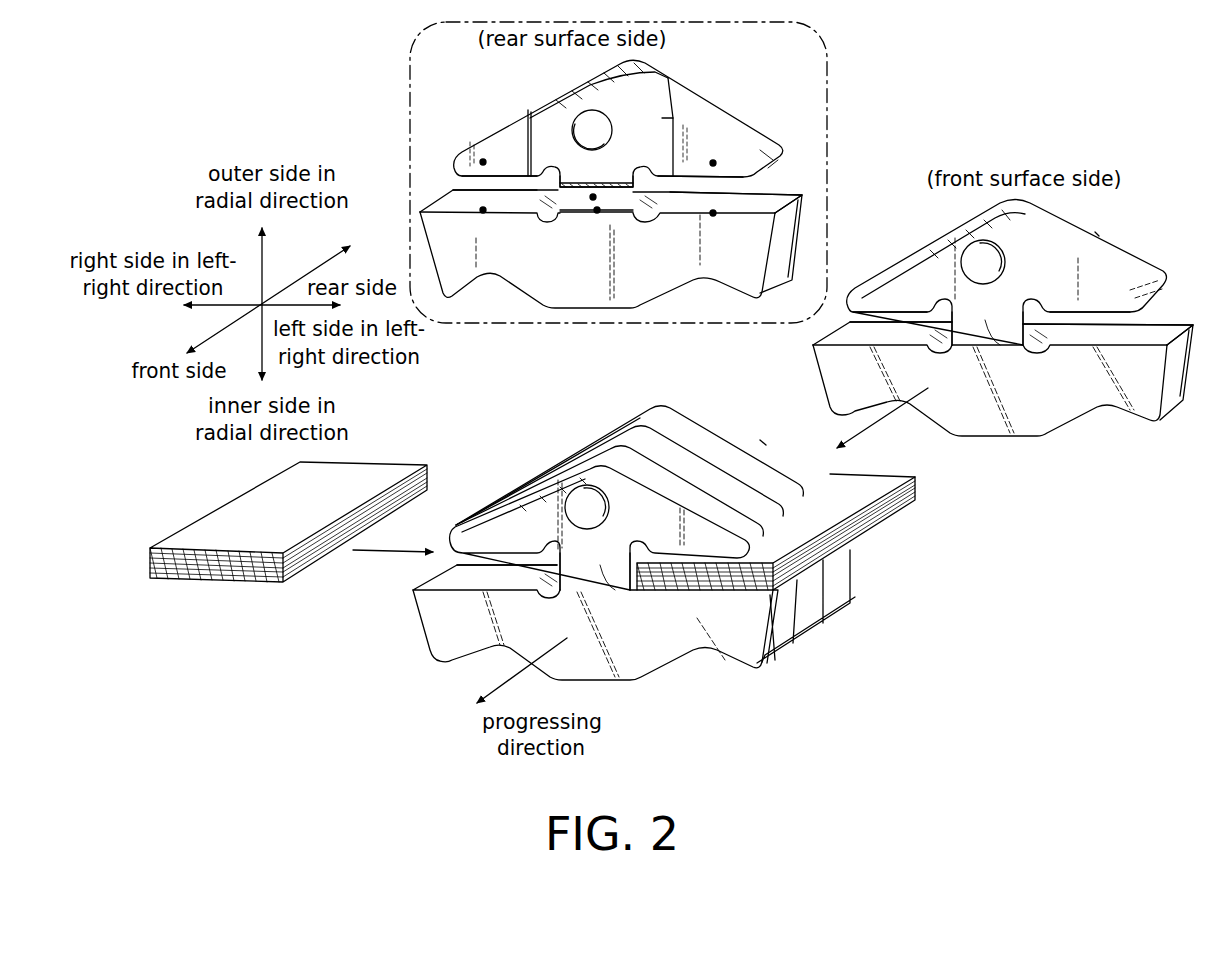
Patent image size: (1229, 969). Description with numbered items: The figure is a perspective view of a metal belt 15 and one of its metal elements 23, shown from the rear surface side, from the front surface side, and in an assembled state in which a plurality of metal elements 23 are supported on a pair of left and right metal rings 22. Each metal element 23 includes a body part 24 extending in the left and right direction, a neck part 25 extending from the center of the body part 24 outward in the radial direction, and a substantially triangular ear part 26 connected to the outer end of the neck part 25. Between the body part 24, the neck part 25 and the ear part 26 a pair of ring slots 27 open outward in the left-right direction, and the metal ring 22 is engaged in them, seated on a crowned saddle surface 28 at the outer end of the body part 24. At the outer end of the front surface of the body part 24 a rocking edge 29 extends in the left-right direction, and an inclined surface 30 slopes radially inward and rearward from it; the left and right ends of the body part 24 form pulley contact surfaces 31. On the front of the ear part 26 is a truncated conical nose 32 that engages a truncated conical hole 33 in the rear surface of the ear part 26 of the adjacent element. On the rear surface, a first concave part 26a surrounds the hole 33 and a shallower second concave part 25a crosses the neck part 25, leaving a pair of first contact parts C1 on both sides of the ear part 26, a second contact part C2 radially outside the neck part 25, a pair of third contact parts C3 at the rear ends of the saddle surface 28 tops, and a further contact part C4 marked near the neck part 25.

The metal belt 15 is at (530, 440).
The metal ring 22 is at (219, 500).
The metal element 23 is at (692, 80).
The body part 24 is at (648, 310).
The neck part 25 is at (640, 194).
The second concave part 25a is at (587, 203).
The ear part 26 is at (530, 106).
The first concave part 26a is at (648, 138).
The ring slot 27 is at (500, 183).
The saddle surface 28 is at (452, 200).
The rocking edge 29 is at (873, 347).
The inclined surface 30 is at (1087, 390).
The pulley contact surface 31 is at (780, 250).
The nose 32 is at (987, 270).
The hole 33 is at (592, 122).
The first contact part C1 is at (481, 160).
The second contact part C2 is at (593, 195).
The third contact part C3 is at (483, 211).
The corner portion C4 is at (597, 212).